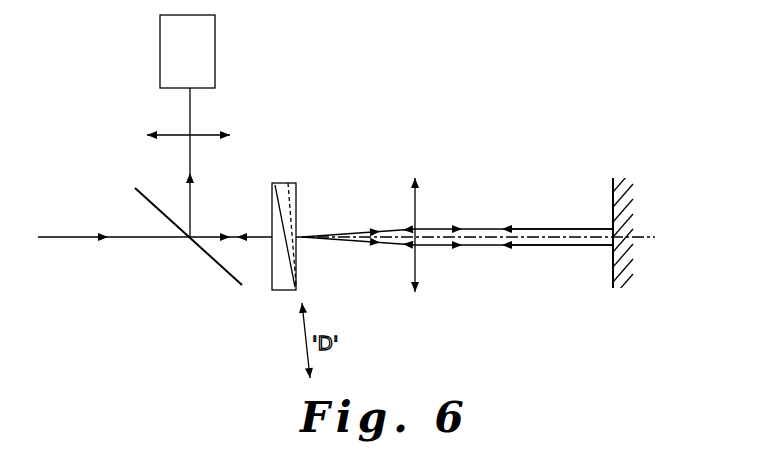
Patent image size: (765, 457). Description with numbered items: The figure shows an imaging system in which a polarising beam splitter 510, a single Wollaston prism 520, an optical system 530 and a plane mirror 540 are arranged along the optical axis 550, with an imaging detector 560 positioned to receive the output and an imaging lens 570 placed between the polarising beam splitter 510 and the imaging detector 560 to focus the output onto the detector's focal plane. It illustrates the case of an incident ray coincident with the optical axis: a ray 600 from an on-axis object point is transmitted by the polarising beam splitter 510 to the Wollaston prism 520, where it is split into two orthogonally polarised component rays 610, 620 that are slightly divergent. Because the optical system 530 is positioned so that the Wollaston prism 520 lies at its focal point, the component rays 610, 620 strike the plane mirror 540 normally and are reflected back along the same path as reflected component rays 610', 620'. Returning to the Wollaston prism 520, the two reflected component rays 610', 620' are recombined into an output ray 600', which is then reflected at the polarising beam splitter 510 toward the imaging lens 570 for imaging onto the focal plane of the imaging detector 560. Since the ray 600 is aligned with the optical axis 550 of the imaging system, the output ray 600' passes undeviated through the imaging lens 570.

The polarising beam splitter 510 is at (220, 267).
The Wollaston prism 520 is at (290, 188).
The optical system 530 is at (420, 166).
The plane mirror 540 is at (623, 192).
The optical axis 550 is at (657, 236).
The imaging detector 560 is at (168, 62).
The imaging lens 570 is at (172, 133).
The ray 600 is at (102, 264).
The output ray 600' is at (235, 164).
The component ray 610 is at (457, 208).
The component ray 620 is at (457, 267).
The reflected component ray 610' is at (559, 202).
The reflected component ray 620' is at (559, 272).